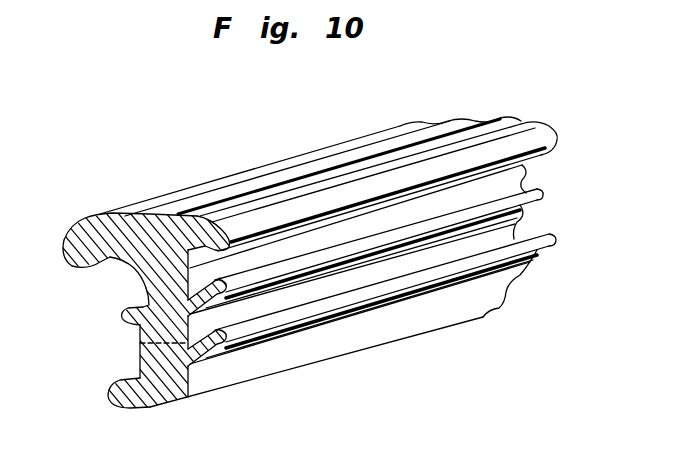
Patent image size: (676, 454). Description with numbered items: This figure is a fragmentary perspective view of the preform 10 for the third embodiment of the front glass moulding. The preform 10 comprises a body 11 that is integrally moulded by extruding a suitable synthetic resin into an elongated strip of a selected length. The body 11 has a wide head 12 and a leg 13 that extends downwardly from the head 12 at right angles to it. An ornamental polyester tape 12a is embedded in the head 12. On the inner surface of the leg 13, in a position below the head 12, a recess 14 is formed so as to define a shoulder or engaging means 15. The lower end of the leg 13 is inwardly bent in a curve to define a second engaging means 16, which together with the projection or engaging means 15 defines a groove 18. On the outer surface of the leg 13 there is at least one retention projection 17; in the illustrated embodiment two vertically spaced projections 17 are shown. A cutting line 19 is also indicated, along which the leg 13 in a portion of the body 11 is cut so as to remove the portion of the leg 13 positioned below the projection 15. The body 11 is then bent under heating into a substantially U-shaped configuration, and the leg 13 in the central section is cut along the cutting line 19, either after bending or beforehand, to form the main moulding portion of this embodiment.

The preform 10 is at (402, 126).
The body 11 is at (341, 143).
The head 12 is at (108, 230).
The ornamental polyester tape 12a is at (162, 212).
The leg 13 is at (134, 303).
The recess 14 is at (113, 273).
The engaging means 15 is at (128, 309).
The second engaging means 16 is at (115, 393).
The retention projection 17 is at (318, 313).
The groove 18 is at (133, 377).
The cutting line 19 is at (163, 392).